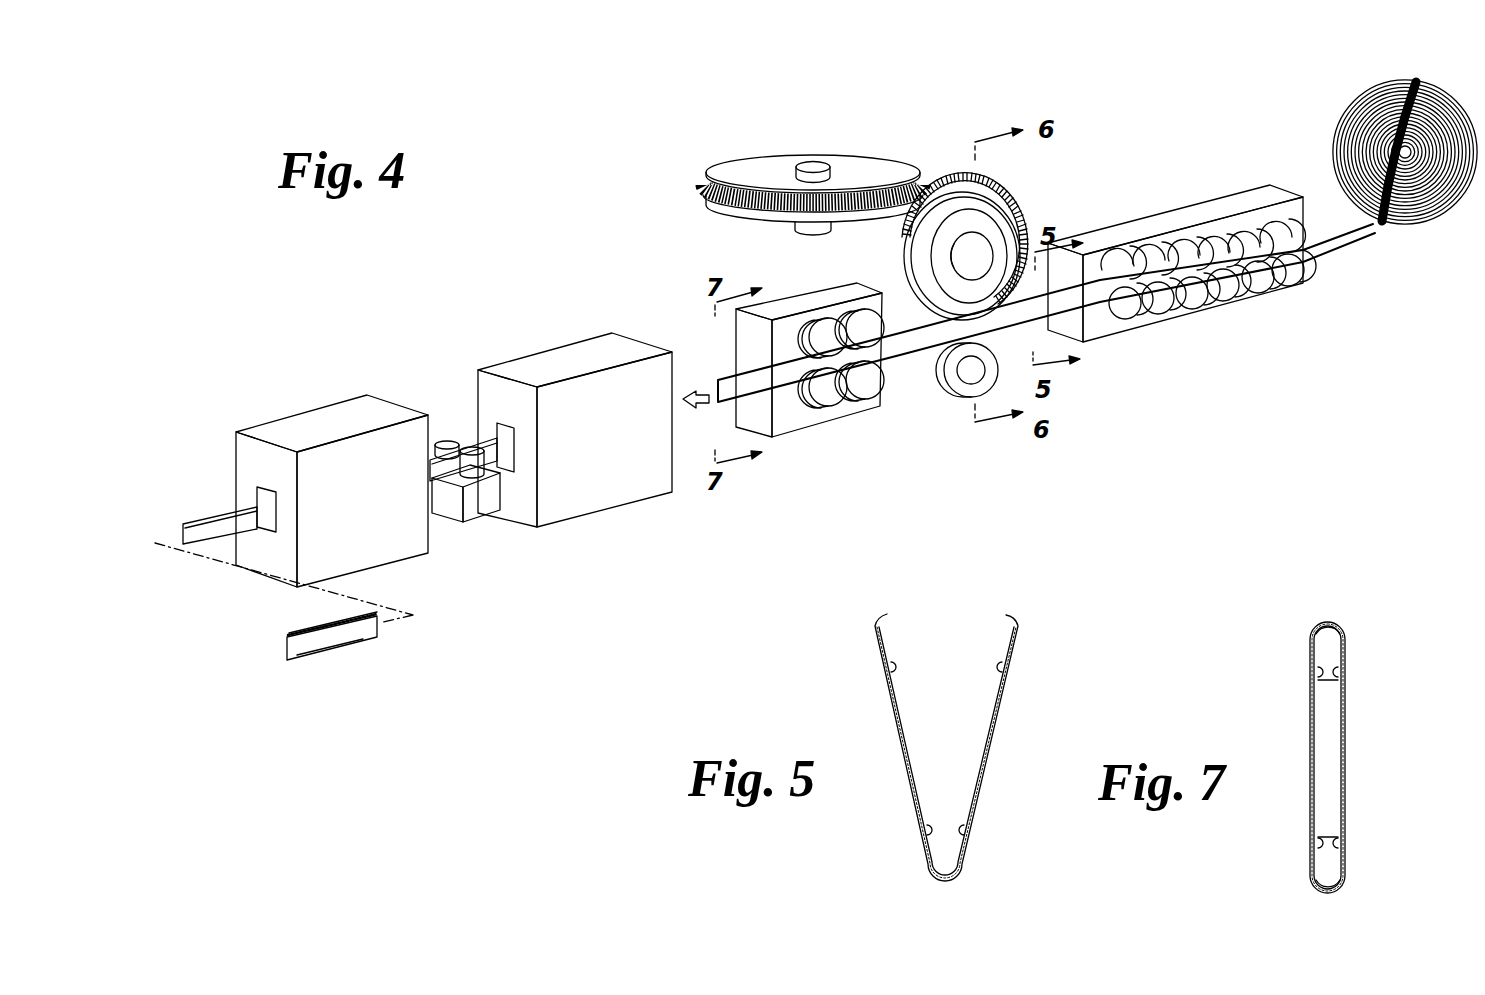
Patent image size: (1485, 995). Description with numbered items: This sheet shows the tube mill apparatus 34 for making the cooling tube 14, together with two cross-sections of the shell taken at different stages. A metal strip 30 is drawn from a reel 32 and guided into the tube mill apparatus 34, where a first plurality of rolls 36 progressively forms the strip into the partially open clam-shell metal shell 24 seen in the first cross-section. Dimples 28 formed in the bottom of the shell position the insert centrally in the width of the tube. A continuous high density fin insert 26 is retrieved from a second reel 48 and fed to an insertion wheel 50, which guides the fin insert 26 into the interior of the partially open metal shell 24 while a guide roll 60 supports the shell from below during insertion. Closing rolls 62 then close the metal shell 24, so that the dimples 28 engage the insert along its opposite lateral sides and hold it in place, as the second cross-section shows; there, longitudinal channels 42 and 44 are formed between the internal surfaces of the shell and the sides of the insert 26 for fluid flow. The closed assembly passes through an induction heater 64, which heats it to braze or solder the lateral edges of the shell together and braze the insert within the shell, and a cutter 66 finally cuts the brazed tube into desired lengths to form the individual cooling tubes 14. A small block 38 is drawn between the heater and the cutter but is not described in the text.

In FIG. 4, the cooling tube 14 is at (340, 660).
In FIG. 4, the metal shell 24 is at (1028, 322).
In FIG. 5, the metal shell 24 is at (893, 724).
In FIG. 7, the metal shell 24 is at (1347, 648).
In FIG. 4, the fin insert 26 is at (1018, 196).
In FIG. 7, the fin insert 26 is at (1337, 748).
In FIG. 5, the dimples 28 is at (999, 667).
In FIG. 7, the dimples 28 is at (1336, 668).
In FIG. 4, the metal strip 30 is at (1325, 250).
In FIG. 4, the reel 32 is at (1352, 103).
In FIG. 4, the tube mill apparatus 34 is at (1168, 112).
In FIG. 4, the first plurality of rolls 36 is at (1234, 196).
In FIG. 4, the transfer block 38 is at (475, 520).
In FIG. 7, the longitudinal channel 42 is at (1325, 633).
In FIG. 7, the longitudinal channel 44 is at (1330, 878).
In FIG. 4, the reel 48 is at (915, 180).
In FIG. 4, the insertion wheel 50 is at (906, 250).
In FIG. 4, the guide roll 60 is at (962, 398).
In FIG. 4, the closing rolls 62 is at (848, 410).
In FIG. 4, the induction heater 64 is at (540, 372).
In FIG. 4, the cutter 66 is at (330, 420).